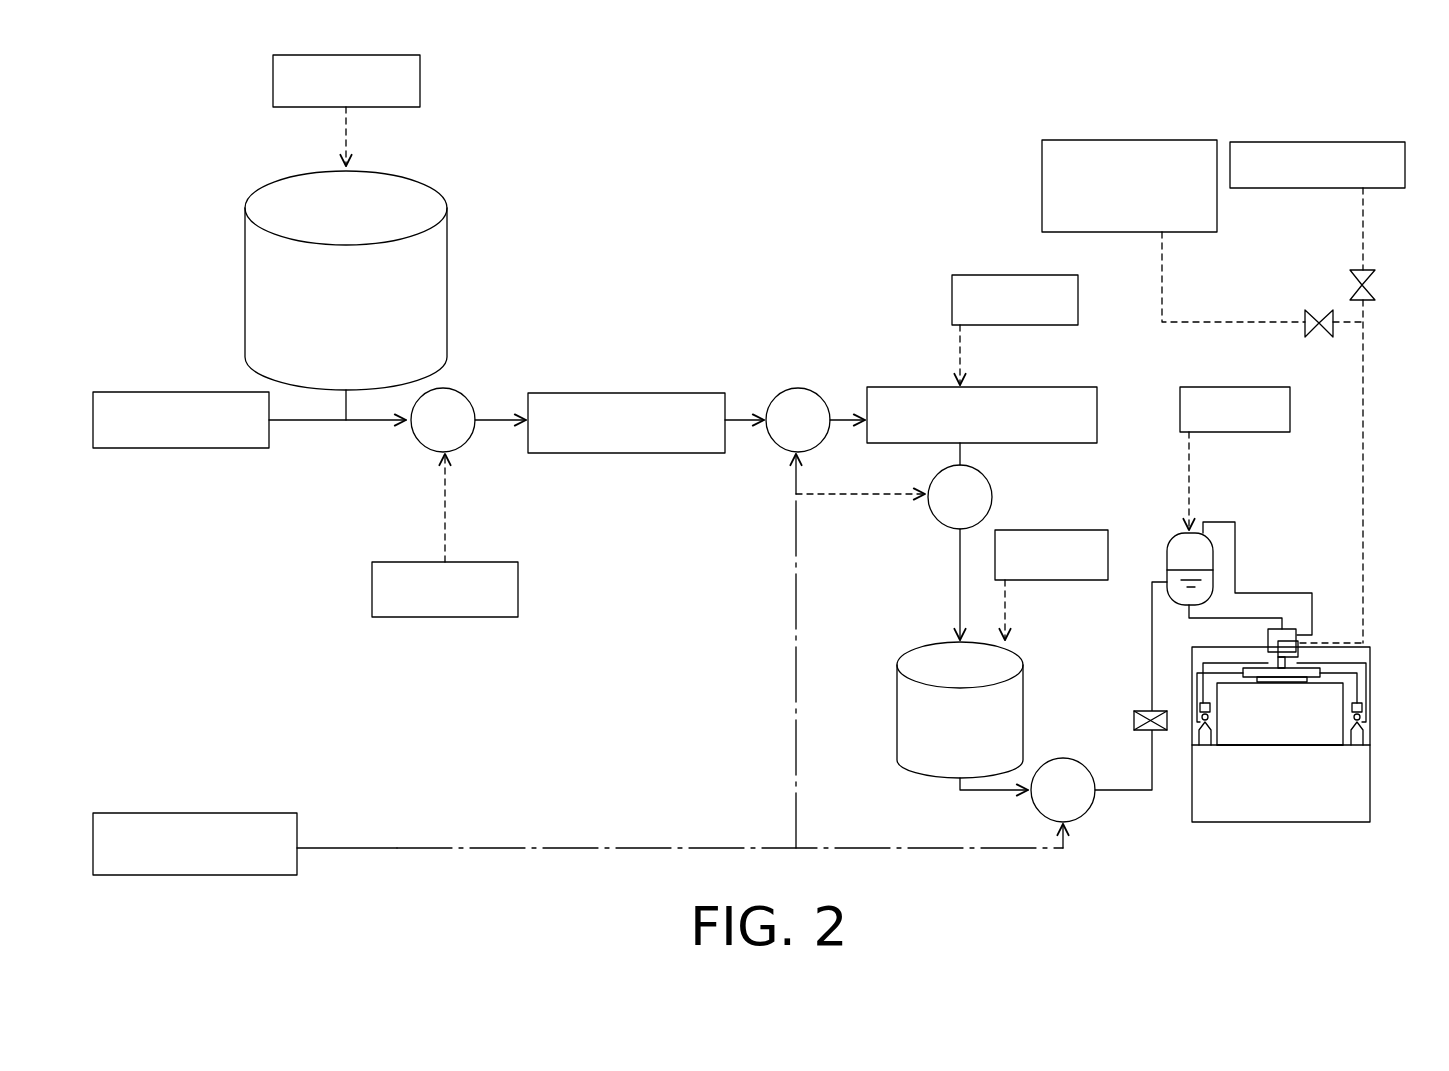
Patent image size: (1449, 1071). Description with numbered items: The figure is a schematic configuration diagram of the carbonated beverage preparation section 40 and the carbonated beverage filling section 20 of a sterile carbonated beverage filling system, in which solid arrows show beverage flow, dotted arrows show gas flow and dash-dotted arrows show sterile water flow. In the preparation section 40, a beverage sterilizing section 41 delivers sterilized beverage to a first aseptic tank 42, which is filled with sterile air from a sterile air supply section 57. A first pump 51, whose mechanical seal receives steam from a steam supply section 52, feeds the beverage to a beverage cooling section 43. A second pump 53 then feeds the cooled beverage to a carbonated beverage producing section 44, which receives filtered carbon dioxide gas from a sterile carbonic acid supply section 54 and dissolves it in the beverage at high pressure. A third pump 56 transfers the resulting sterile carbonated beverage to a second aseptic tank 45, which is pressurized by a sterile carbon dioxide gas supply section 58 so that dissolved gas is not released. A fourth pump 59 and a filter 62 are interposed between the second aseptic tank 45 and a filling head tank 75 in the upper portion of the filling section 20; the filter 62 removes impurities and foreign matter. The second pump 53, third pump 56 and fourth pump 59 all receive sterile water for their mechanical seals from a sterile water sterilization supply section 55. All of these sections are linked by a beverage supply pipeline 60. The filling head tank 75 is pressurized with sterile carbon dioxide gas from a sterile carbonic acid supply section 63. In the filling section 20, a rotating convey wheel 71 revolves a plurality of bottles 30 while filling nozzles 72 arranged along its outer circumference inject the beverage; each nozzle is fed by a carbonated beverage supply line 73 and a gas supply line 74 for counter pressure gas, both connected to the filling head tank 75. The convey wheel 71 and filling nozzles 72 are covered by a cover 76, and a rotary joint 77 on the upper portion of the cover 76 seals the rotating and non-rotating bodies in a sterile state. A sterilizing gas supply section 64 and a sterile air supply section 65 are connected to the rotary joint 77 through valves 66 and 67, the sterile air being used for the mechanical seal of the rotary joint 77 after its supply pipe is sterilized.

The carbonated beverage filling section 20 is at (1315, 838).
The bottle 30 is at (1358, 748).
The carbonated beverage preparation section 40 is at (750, 200).
The beverage sterilizing section 41 is at (165, 436).
The first aseptic tank 42 is at (447, 290).
The beverage cooling section 43 is at (610, 438).
The carbonated beverage producing section 44 is at (966, 431).
The second aseptic tank 45 is at (897, 710).
The first pump 51 is at (427, 435).
The steam supply section 52 is at (429, 605).
The second pump 53 is at (782, 435).
The sterile carbonic acid supply section 54 is at (999, 315).
The sterile water sterilization supply section 55 is at (179, 861).
The third pump 56 is at (944, 512).
The sterile air supply section 57 is at (331, 98).
The sterile carbon dioxide gas supply section 58 is at (1035, 570).
The fourth pump 59 is at (1047, 805).
The beverage supply pipeline 60 is at (302, 422).
The filter 62 is at (1134, 718).
The sterile carbonic acid supply section 63 is at (1218, 425).
The sterilizing gas supply section 64 is at (1114, 201).
The sterile air supply section 65 is at (1299, 180).
The valve 66 is at (1318, 312).
The valve 67 is at (1377, 283).
The convey wheel 71 is at (1280, 740).
The filling nozzle 72 is at (1198, 728).
The carbonated beverage supply line 73 is at (1215, 663).
The gas supply line 74 is at (1264, 593).
The filling head tank 75 is at (1172, 541).
The cover 76 is at (1370, 652).
The rotary joint 77 is at (1297, 633).